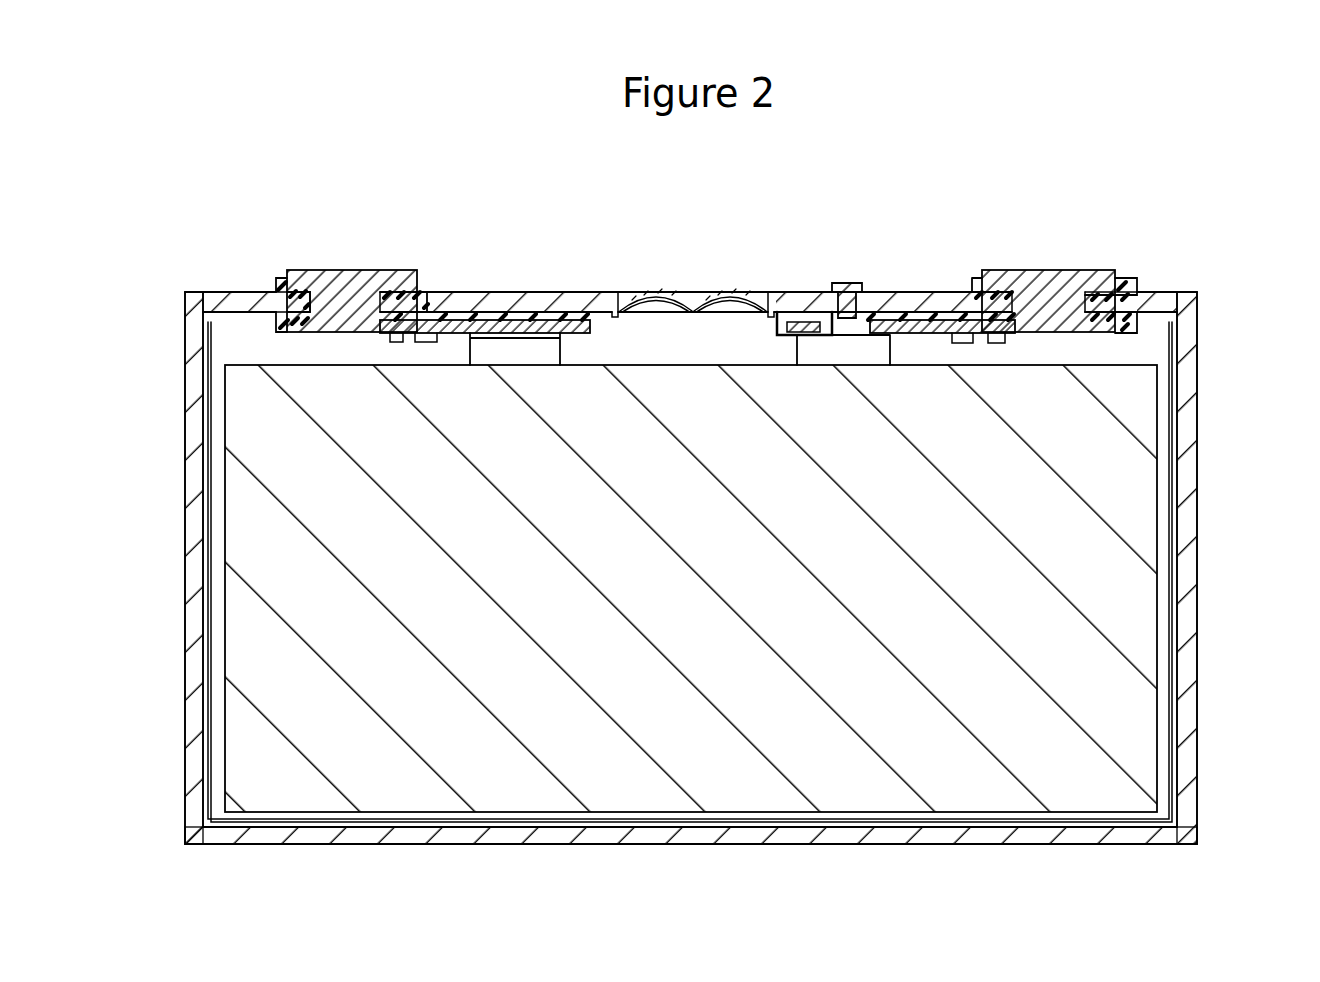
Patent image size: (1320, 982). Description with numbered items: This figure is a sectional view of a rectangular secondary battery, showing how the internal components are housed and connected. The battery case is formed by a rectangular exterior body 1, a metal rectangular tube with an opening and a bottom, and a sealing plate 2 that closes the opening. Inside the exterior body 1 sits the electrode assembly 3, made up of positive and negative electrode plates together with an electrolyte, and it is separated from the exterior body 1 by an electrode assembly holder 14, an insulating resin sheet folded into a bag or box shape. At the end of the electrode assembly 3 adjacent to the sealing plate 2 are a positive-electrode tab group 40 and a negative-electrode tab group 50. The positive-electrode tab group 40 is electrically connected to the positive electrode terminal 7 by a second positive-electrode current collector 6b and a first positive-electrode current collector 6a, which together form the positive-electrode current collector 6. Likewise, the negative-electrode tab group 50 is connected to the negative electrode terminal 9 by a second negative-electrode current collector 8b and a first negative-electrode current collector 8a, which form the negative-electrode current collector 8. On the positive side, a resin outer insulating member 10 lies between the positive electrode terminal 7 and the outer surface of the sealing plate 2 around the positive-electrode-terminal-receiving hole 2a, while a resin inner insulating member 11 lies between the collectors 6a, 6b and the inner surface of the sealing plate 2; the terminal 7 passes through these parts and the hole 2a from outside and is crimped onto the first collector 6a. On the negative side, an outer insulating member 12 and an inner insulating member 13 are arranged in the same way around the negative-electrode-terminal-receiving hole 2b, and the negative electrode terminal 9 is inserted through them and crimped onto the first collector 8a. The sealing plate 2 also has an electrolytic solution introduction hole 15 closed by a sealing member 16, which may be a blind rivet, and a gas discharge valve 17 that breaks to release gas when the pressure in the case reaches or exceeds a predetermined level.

The rectangular exterior body 1 is at (1183, 610).
The sealing plate 2 is at (597, 300).
The positive-electrode-terminal-receiving hole 2a is at (1125, 300).
The negative-electrode-terminal-receiving hole 2b is at (303, 304).
The electrode assembly 3 is at (247, 733).
The positive-electrode current collector 6 is at (931, 347).
The first positive-electrode current collector 6a is at (1137, 318).
The second positive-electrode current collector 6b is at (940, 320).
The positive electrode terminal 7 is at (1052, 290).
The negative-electrode current collector 8 is at (402, 346).
The first negative-electrode current collector 8a is at (298, 332).
The second negative-electrode current collector 8b is at (462, 322).
The negative electrode terminal 9 is at (350, 272).
The outer insulating member 10 is at (1118, 283).
The inner insulating member 11 is at (890, 322).
The outer insulating member 12 is at (278, 282).
The inner insulating member 13 is at (553, 320).
The electrode assembly holder 14 is at (1170, 676).
The electrolytic solution introduction hole 15 is at (822, 348).
The sealing member 16 is at (847, 283).
The gas discharge valve 17 is at (672, 300).
The positive-electrode tab group 40 is at (818, 330).
The negative-electrode tab group 50 is at (508, 335).